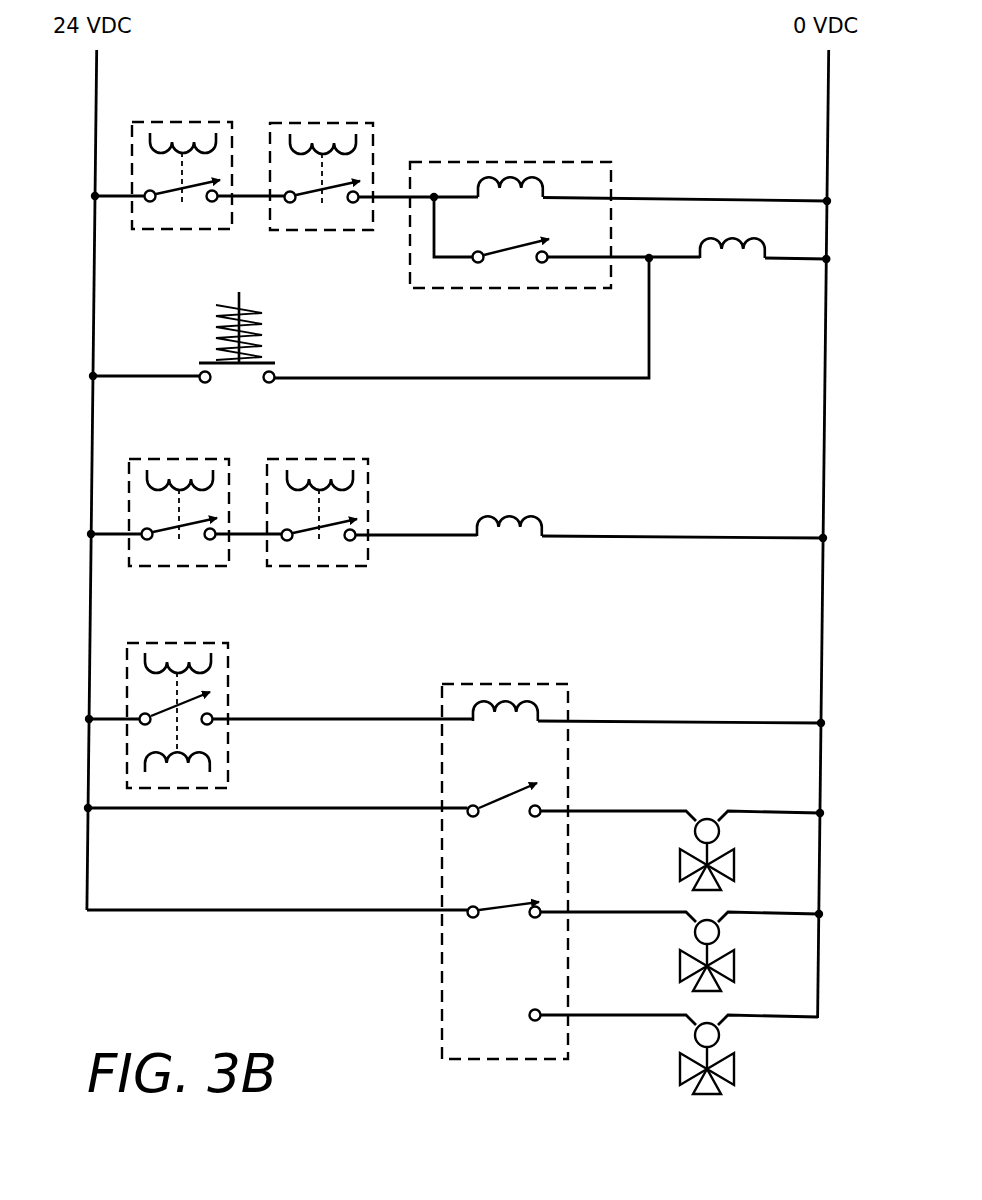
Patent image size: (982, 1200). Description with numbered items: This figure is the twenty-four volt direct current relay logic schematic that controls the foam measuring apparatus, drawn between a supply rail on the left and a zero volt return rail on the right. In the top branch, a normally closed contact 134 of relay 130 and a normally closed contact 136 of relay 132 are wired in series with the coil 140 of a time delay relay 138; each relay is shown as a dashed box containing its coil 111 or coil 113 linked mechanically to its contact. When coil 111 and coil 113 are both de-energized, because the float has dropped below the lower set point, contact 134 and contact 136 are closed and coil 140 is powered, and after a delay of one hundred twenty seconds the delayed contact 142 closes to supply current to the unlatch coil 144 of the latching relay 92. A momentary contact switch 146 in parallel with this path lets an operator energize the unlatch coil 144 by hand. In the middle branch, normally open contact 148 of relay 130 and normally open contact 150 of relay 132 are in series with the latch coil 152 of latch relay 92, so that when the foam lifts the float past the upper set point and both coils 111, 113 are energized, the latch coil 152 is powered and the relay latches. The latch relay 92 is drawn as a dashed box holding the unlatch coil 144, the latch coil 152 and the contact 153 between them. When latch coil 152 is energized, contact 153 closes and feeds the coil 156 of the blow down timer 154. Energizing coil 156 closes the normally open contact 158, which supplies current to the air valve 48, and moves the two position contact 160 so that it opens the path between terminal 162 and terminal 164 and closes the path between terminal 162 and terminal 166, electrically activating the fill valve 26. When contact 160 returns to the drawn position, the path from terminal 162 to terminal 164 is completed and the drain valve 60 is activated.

The fill valve 26 is at (680, 1066).
The air valve 48 is at (680, 860).
The drain valve 60 is at (680, 962).
The latching relay 92 is at (127, 645).
The coil of relay 130 111 is at (163, 133).
The coil of relay 132 113 is at (301, 134).
The relay 130 is at (132, 139).
The relay 132 is at (373, 150).
The normally closed contact 134 is at (160, 200).
The normally closed contact 136 is at (300, 201).
The time delay relay 138 is at (611, 162).
The coil of time delay relay 140 is at (540, 180).
The contact of time delay relay 142 is at (500, 258).
The unlatch coil 144 is at (738, 240).
The momentary contact switch 146 is at (245, 305).
The normally open contact 148 is at (160, 538).
The normally open contact 150 is at (300, 539).
The latch coil 152 is at (515, 520).
The contact of latch relay 153 is at (165, 708).
The blow down timer 154 is at (568, 684).
The coil of blow down timer 156 is at (500, 705).
The normally open contact 158 is at (480, 805).
The two position contact 160 is at (498, 903).
The terminal 162 is at (475, 918).
The terminal 164 is at (533, 918).
The terminal 166 is at (529, 1015).